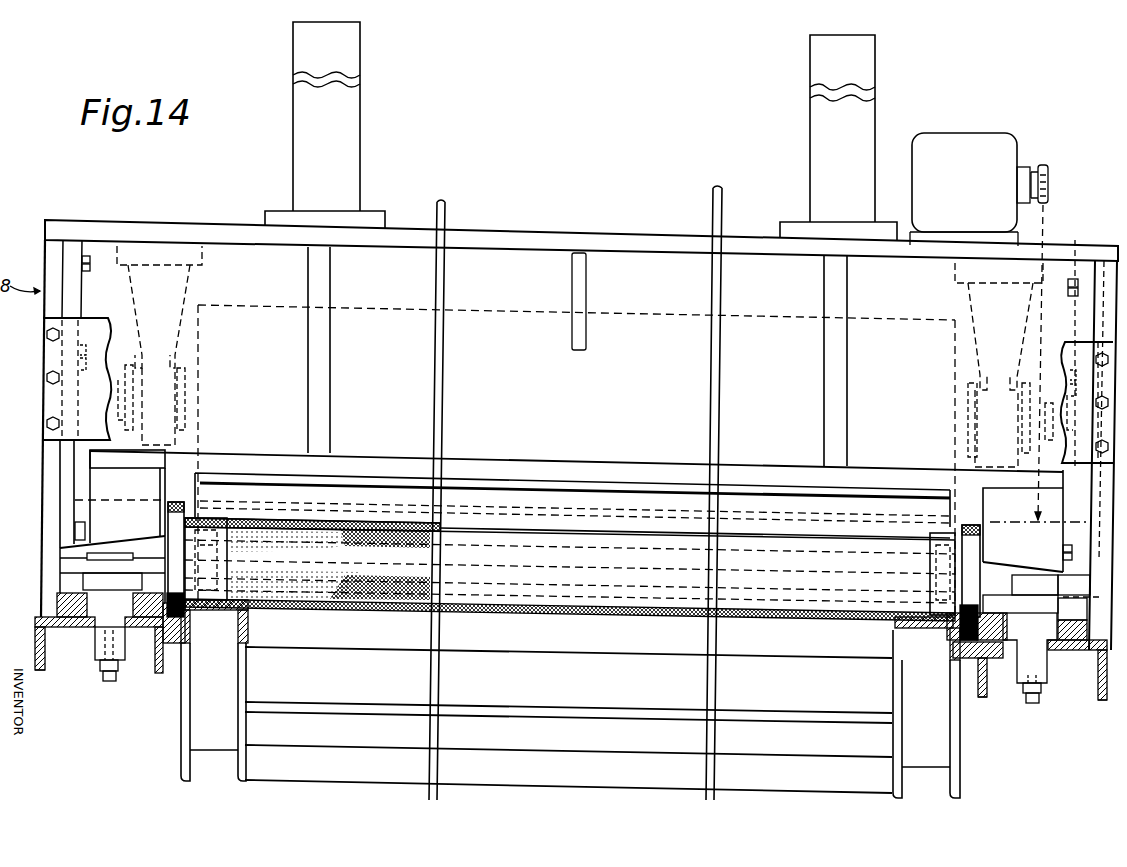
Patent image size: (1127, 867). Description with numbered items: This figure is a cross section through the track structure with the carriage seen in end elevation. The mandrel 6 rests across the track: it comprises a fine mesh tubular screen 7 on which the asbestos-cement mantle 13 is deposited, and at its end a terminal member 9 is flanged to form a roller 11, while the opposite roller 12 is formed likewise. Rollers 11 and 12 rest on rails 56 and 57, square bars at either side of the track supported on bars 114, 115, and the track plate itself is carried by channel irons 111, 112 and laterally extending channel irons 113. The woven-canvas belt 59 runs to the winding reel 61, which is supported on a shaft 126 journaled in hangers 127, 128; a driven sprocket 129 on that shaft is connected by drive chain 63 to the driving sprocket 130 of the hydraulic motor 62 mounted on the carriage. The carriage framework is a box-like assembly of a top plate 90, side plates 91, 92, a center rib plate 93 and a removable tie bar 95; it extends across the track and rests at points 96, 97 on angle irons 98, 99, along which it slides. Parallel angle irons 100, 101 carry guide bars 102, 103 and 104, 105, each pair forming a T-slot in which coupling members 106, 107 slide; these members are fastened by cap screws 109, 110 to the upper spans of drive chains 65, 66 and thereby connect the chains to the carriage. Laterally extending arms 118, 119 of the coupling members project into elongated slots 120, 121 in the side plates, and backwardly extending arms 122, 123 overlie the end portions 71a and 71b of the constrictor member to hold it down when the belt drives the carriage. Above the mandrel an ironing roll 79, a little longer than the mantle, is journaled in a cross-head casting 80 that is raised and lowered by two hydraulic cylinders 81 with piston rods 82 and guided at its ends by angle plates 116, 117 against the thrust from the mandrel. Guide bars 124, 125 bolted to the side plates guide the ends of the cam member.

The mandrel 6 is at (223, 518).
The tubular screen 7 is at (250, 524).
The terminal member 9 is at (207, 524).
The roller 11 is at (173, 502).
The roller 12 is at (970, 525).
The mantle 13 is at (272, 524).
The rail 56 is at (190, 623).
The rail 57 is at (950, 640).
The belt 59 is at (318, 527).
The winding reel 61 is at (474, 311).
The hydraulic motor 62 is at (967, 132).
The drive chain 63 is at (1046, 238).
The drive chain 65 is at (98, 667).
The drive chain 66 is at (1042, 690).
The end portion of constrictor member 71a is at (118, 590).
The end portion of constrictor member 71b is at (1040, 605).
The ironing roll 79 is at (641, 490).
The cross-head casting 80 is at (565, 466).
The hydraulic cylinder 81 is at (362, 83).
The piston rod 82 is at (323, 383).
The top plate 90 is at (524, 222).
The side plate 91 is at (42, 460).
The side plate 92 is at (1100, 322).
The center rib plate 93 is at (641, 278).
The tie bar 95 is at (92, 320).
The carriage rest point 96 is at (48, 616).
The carriage rest point 97 is at (1093, 650).
The angle iron 98 is at (40, 672).
The angle iron 99 is at (1098, 702).
The angle iron 100 is at (152, 668).
The angle iron 101 is at (979, 700).
The guide bar 102 is at (62, 580).
The guide bar 103 is at (150, 600).
The guide bar 104 is at (1073, 619).
The guide bar 105 is at (986, 620).
The coupling member 106 is at (103, 567).
The coupling member 107 is at (1033, 645).
The cap screw 109 is at (108, 685).
The cap screw 110 is at (1030, 706).
The channel iron 111 is at (180, 733).
The channel iron 112 is at (960, 769).
The channel iron 113 is at (568, 640).
The bar 114 is at (172, 647).
The bar 115 is at (950, 672).
The angle plate 116 is at (88, 479).
The angle plate 117 is at (1018, 522).
The laterally extending arm 118 is at (62, 548).
The laterally extending arm 119 is at (1068, 582).
The elongated slot 120 is at (50, 558).
The elongated slot 121 is at (1100, 578).
The backwardly extending arm 122 is at (124, 556).
The backwardly extending arm 123 is at (1023, 582).
The guide bar 124 is at (64, 505).
The guide bar 125 is at (1080, 515).
The shaft 126 is at (194, 377).
The hanger 127 is at (186, 417).
The hanger 128 is at (975, 410).
The driven sprocket 129 is at (1022, 342).
The driving sprocket 130 is at (1047, 165).